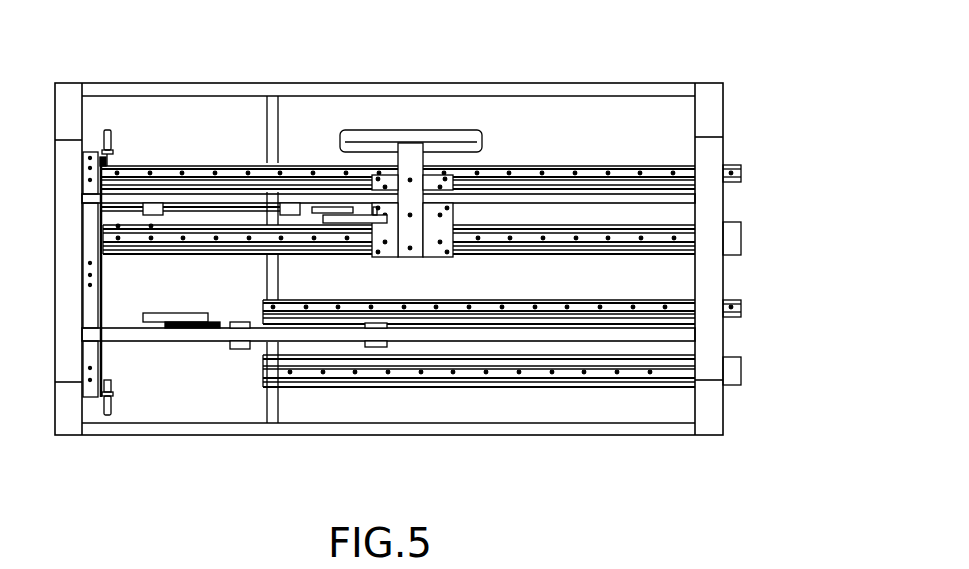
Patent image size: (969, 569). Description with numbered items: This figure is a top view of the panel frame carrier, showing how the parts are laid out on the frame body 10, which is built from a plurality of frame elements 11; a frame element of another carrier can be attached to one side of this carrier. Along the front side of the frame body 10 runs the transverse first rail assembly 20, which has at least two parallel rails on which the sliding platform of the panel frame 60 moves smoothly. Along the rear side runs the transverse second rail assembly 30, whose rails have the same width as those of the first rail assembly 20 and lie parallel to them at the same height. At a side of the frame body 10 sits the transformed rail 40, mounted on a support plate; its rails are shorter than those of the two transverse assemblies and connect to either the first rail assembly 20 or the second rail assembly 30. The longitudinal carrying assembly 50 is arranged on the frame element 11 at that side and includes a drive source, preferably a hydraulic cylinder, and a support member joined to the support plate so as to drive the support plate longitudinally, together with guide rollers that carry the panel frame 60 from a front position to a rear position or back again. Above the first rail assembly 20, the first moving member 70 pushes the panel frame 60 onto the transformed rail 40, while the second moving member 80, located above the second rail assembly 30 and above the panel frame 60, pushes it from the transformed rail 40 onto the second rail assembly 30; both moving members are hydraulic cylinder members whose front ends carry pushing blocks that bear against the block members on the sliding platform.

The frame body 10 is at (658, 70).
The frame element 11 is at (708, 112).
The transverse first rail assembly 20 is at (755, 170).
The transverse second rail assembly 30 is at (755, 303).
The transformed rail 40 is at (162, 177).
The longitudinal carrying assembly 50 is at (112, 316).
The panel frame 60 is at (437, 173).
The first moving member 70 is at (337, 190).
The second moving member 80 is at (197, 322).